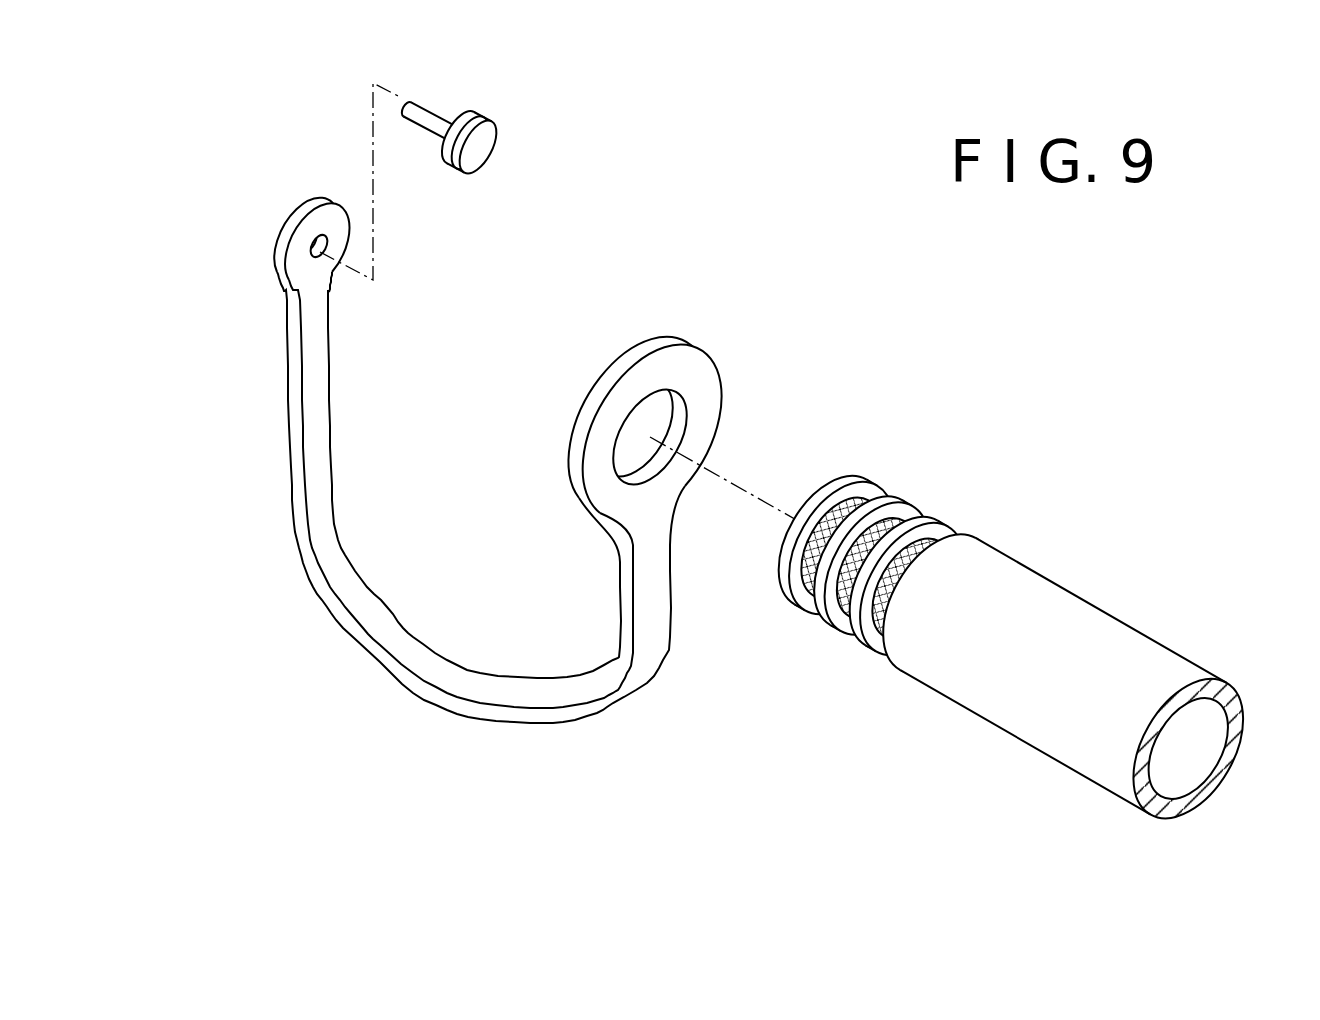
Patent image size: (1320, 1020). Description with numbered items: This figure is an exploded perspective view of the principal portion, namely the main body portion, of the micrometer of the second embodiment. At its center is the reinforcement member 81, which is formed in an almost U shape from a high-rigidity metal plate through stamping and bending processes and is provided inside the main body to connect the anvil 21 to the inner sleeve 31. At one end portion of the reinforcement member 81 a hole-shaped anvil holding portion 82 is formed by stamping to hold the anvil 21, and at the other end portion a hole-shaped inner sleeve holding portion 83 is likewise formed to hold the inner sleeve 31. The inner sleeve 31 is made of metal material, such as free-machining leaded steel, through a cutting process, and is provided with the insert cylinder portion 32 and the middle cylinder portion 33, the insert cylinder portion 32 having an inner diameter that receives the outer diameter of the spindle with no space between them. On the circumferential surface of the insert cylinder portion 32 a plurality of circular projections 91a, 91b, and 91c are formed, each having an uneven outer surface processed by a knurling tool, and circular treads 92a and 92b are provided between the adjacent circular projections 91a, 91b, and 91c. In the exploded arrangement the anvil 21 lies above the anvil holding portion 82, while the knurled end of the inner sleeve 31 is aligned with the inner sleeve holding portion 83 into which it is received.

The anvil 21 is at (487, 133).
The inner sleeve 31 is at (1176, 665).
The insert cylinder portion 32 is at (871, 487).
The middle cylinder portion 33 is at (1090, 780).
The reinforcement member 81 is at (418, 707).
The anvil holding portion 82 is at (312, 251).
The inner sleeve holding portion 83 is at (616, 440).
The circular projection 91a is at (816, 617).
The circular projection 91b is at (850, 634).
The circular projection 91c is at (877, 649).
The circular tread 92a is at (899, 510).
The circular tread 92b is at (927, 534).